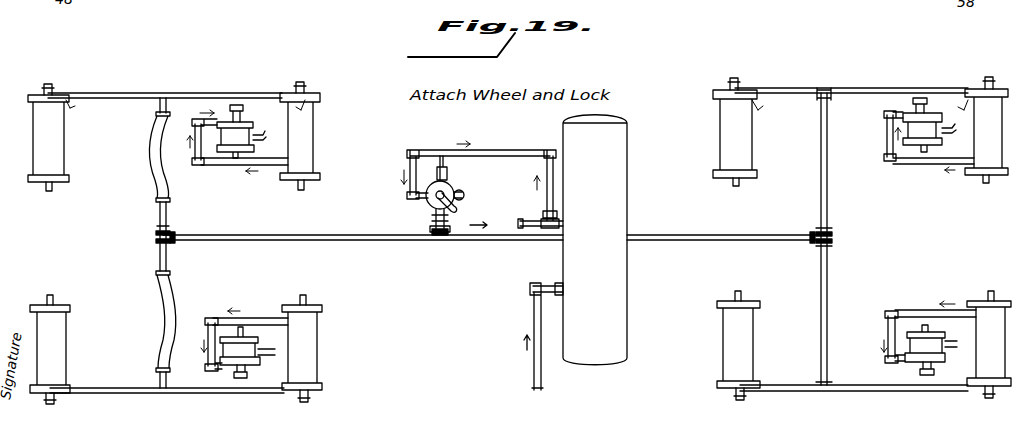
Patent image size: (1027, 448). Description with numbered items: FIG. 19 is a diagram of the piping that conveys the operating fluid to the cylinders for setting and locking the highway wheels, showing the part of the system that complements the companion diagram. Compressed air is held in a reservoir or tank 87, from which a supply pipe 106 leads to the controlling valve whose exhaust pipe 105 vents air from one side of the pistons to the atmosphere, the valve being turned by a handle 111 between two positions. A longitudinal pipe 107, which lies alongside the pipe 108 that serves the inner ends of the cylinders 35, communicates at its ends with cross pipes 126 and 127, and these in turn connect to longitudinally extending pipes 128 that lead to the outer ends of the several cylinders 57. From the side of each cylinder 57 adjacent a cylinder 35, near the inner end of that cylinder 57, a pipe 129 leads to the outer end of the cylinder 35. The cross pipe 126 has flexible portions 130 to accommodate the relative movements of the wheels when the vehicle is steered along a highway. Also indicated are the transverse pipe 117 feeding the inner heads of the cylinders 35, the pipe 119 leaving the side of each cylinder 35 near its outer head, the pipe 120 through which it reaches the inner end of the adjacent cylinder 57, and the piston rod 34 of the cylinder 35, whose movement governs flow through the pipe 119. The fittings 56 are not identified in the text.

The piston rod 34 is at (238, 106).
The cylinder 35 is at (248, 145).
The upper fitting 56 is at (42, 84).
The cylinder 57 is at (40, 146).
The reservoir or tank 87 is at (595, 240).
The exhaust pipe 105 is at (462, 190).
The supply pipe 106 is at (484, 150).
The pipe 107 is at (434, 222).
The pipe 108 is at (438, 166).
The handle 111 is at (446, 224).
The transverse pipe 117 is at (193, 140).
The pipe 119 is at (266, 134).
The pipe 120 is at (54, 186).
The cross pipe 126 is at (168, 218).
The cross pipe 127 is at (828, 210).
The longitudinally extending pipe 128 is at (100, 93).
The pipe 129 is at (197, 166).
The flexible portions 130 is at (150, 157).